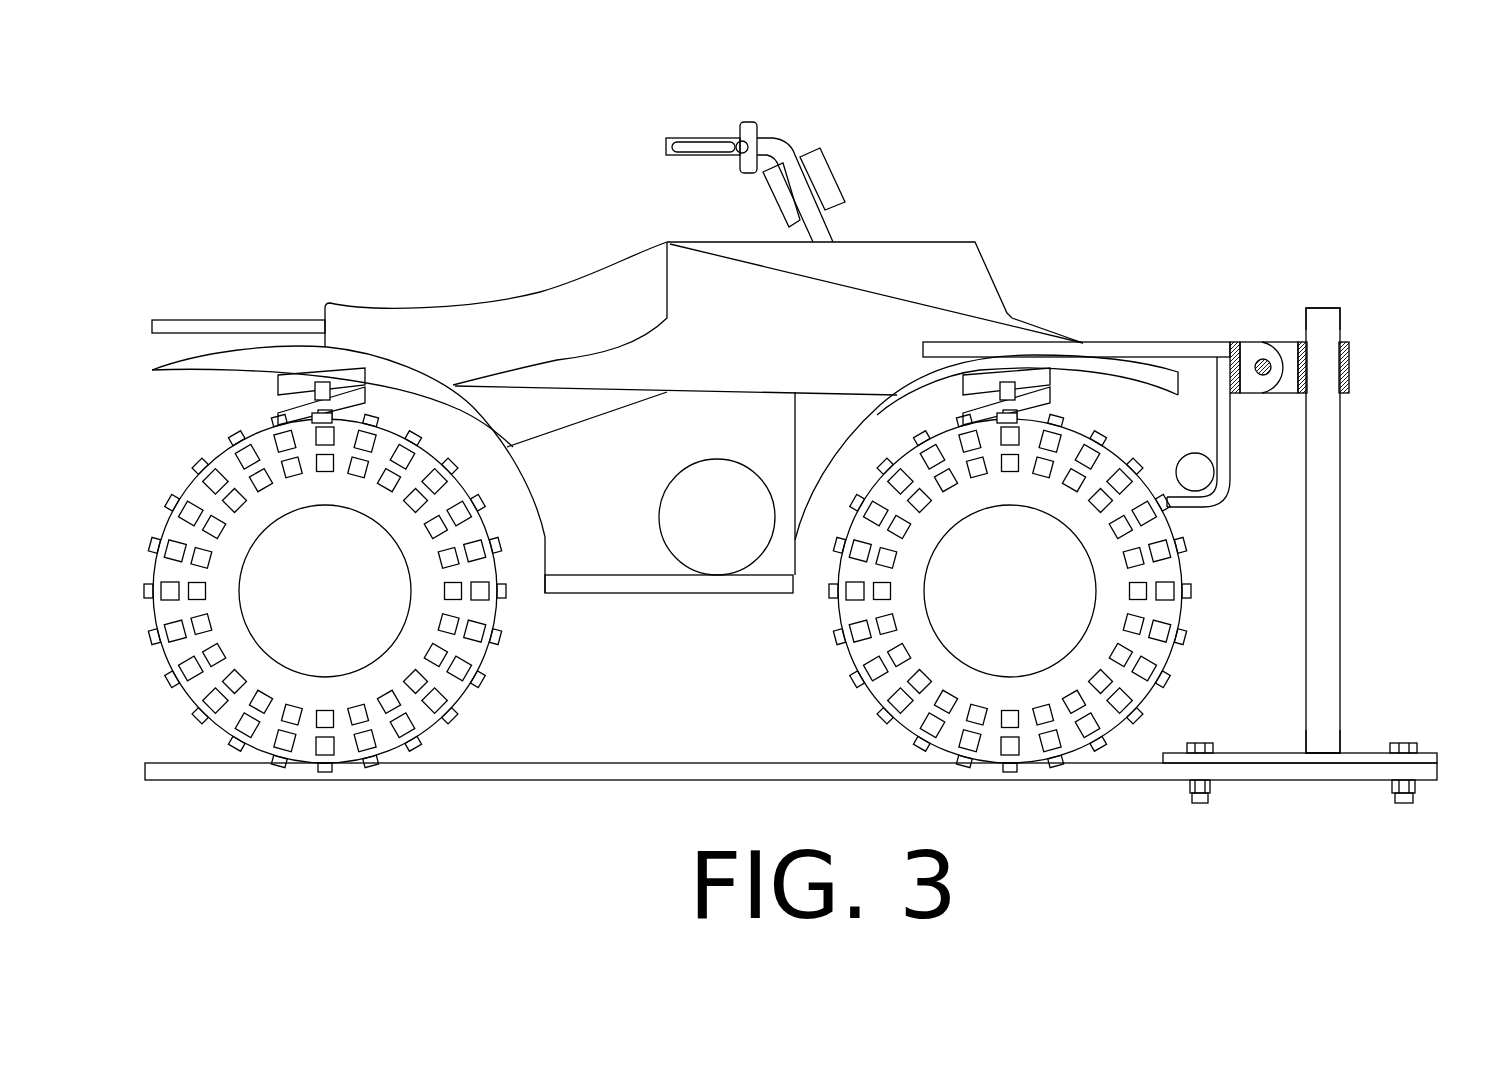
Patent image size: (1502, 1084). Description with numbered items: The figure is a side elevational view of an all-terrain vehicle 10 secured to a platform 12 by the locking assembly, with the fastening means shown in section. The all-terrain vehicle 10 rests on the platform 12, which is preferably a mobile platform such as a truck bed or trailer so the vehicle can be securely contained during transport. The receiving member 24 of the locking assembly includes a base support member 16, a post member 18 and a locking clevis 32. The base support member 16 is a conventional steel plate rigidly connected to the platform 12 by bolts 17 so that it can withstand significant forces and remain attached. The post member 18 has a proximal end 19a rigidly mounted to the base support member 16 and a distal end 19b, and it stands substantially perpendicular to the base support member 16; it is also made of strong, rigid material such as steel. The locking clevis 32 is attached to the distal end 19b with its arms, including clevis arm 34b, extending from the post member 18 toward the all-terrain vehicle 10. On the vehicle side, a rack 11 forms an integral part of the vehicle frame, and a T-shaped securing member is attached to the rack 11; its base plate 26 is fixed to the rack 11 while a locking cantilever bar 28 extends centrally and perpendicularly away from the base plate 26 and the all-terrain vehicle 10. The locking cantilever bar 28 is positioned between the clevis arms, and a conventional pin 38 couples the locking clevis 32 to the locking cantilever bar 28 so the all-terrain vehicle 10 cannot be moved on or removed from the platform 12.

The all-terrain vehicle 10 is at (528, 320).
The rack 11 is at (1200, 500).
The platform 12 is at (530, 770).
The base support member 16 is at (1275, 752).
The bolts 17 is at (1212, 785).
The post member 18 is at (1320, 458).
The proximal end 19a is at (1348, 743).
The distal end 19b is at (1342, 313).
The receiving member 24 is at (1317, 283).
The base plate 26 is at (1232, 393).
The locking cantilever bar 28 is at (1262, 347).
The locking clevis 32 is at (1386, 373).
The clevis arm 34b is at (1292, 348).
The pin 38 is at (1262, 376).